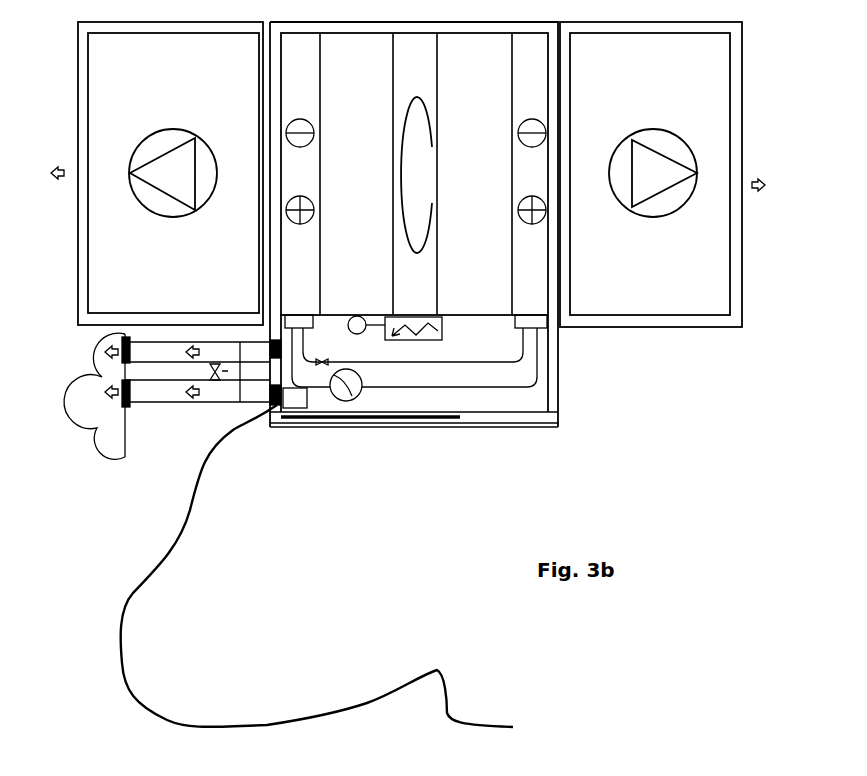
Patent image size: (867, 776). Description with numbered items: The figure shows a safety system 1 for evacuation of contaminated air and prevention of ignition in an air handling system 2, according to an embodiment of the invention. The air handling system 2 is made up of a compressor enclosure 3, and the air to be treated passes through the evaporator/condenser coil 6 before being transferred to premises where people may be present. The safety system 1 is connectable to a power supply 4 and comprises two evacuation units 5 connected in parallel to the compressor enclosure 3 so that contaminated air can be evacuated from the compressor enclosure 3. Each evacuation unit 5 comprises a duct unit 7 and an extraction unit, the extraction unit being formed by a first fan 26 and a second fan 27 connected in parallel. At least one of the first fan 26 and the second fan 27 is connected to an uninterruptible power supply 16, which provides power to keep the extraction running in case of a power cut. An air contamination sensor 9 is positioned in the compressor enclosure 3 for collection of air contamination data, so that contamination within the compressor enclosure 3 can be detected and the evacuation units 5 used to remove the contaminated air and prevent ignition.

The safety system 1 is at (90, 560).
The air handling system 2 is at (274, 532).
The compressor enclosure 3 is at (463, 350).
The power supply 4 is at (298, 720).
The evacuation unit 5 is at (207, 437).
The evaporator/condenser coil 6 is at (520, 283).
The duct unit 7 is at (182, 395).
The air contamination sensor 9 is at (362, 333).
The uninterruptible power supply 16 is at (307, 417).
The first fan 26 is at (274, 352).
The second fan 27 is at (270, 402).